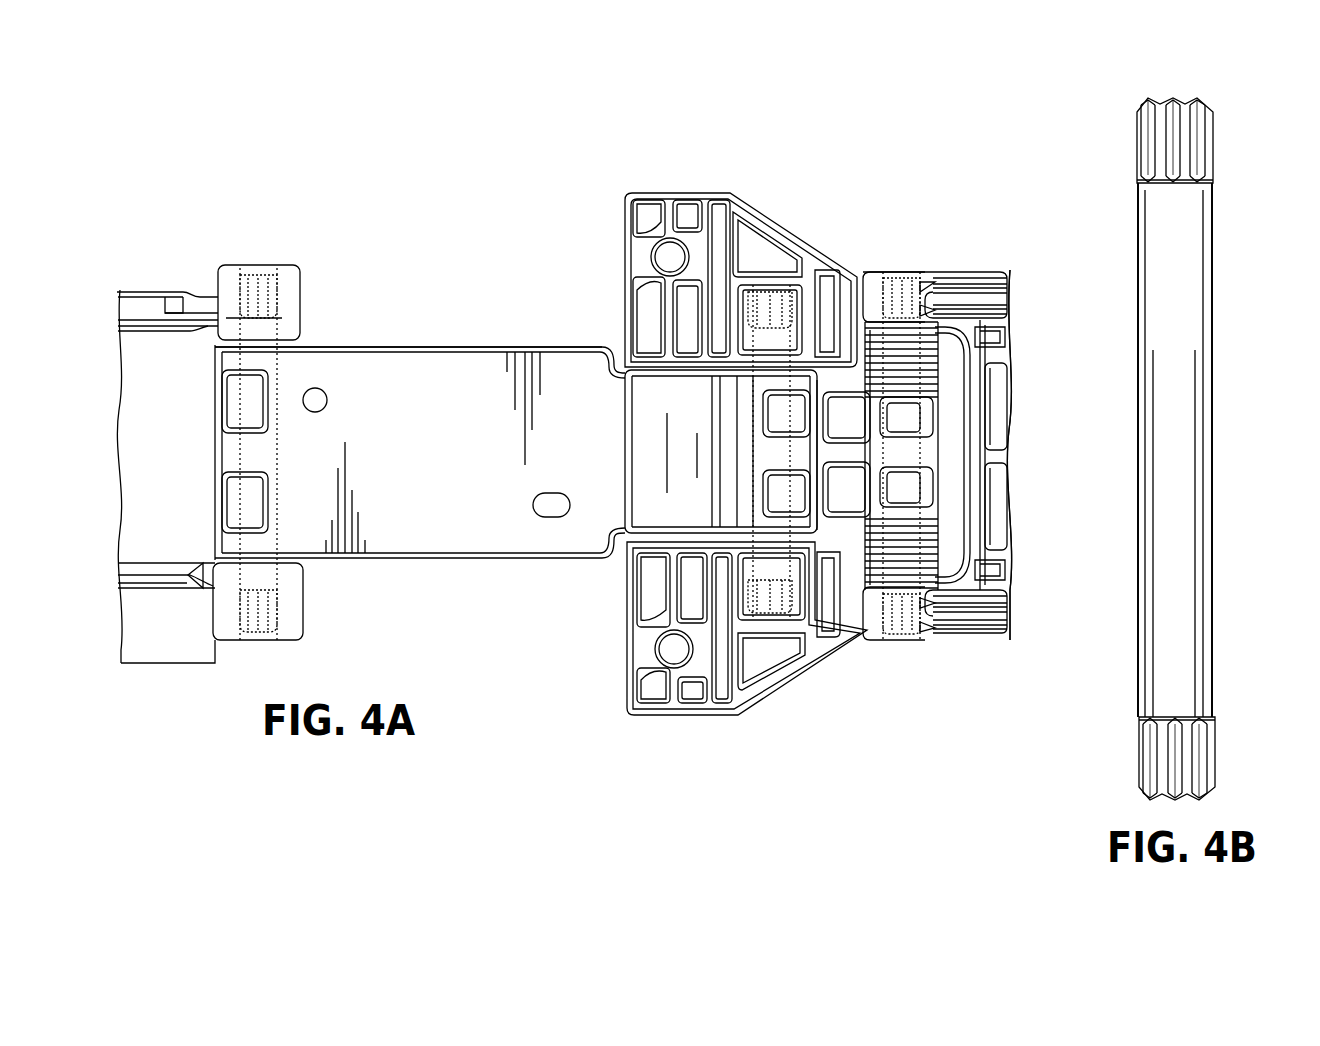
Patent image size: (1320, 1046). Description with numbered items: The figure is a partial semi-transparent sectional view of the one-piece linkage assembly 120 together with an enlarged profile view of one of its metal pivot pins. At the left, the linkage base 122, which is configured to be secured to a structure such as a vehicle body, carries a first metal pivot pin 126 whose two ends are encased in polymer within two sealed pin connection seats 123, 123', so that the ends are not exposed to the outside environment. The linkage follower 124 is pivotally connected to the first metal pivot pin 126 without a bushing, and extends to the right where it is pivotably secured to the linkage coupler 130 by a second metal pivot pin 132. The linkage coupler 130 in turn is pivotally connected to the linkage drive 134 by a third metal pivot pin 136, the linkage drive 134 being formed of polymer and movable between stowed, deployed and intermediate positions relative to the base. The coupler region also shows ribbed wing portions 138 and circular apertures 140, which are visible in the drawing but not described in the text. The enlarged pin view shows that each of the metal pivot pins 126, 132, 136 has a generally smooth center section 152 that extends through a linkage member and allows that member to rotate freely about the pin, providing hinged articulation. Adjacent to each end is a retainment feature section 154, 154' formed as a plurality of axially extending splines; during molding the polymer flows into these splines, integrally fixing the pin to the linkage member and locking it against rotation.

In FIG. 4A, the one-piece linkage assembly 120 is at (210, 168).
In FIG. 4A, the linkage base 122 is at (195, 288).
In FIG. 4A, the sealed pin connection seat 123 is at (302, 271).
In FIG. 4A, the sealed pin connection seat 123' is at (314, 601).
In FIG. 4A, the linkage follower 124 is at (400, 386).
In FIG. 4A, the first metal pivot pin 126 is at (266, 365).
In FIG. 4B, the first metal pivot pin 126 is at (1139, 74).
In FIG. 4A, the linkage coupler 130 is at (790, 220).
In FIG. 4A, the second metal pivot pin 132 is at (746, 270).
In FIG. 4B, the second metal pivot pin 132 is at (1175, 450).
In FIG. 4A, the linkage drive 134 is at (975, 295).
In FIG. 4A, the third metal pivot pin 136 is at (881, 290).
In FIG. 4B, the third metal pivot pin 136 is at (1175, 450).
In FIG. 4A, the wing 138 is at (625, 224).
In FIG. 4A, the aperture 140 is at (665, 259).
In FIG. 4B, the smooth surface section 152 is at (1199, 236).
In FIG. 4B, the retainment feature section 154 is at (1206, 137).
In FIG. 4B, the retainment feature section 154' is at (1220, 754).